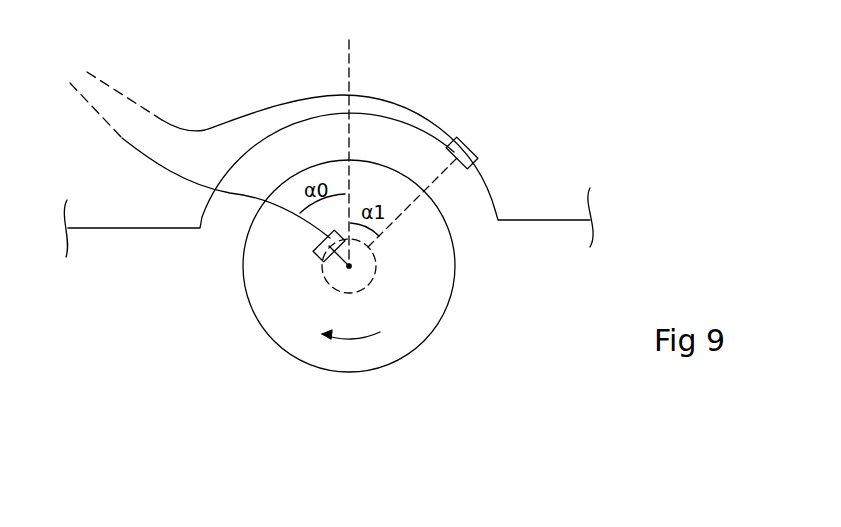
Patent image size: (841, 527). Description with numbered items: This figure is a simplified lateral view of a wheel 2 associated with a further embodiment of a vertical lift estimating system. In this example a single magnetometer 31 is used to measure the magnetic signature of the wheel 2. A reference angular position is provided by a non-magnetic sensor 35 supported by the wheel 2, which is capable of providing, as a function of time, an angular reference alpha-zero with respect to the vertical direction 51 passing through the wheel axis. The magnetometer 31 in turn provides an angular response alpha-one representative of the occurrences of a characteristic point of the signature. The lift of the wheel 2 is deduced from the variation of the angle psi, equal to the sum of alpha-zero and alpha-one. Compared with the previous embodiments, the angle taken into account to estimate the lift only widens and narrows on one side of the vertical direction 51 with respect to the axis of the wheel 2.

The wheel 2 is at (432, 308).
The vertical direction 51 is at (349, 43).
The magnetometer 31 is at (476, 153).
The non-magnetic sensor 35 is at (318, 253).